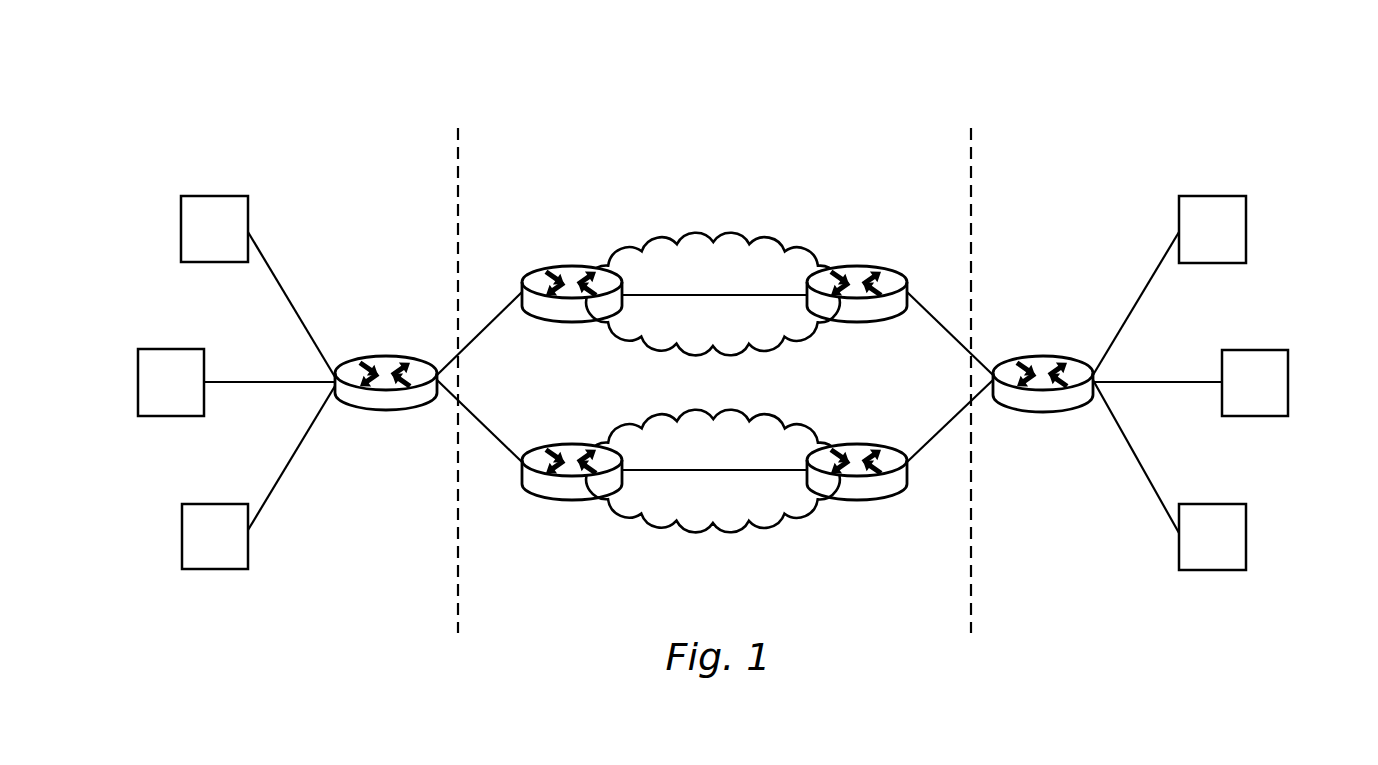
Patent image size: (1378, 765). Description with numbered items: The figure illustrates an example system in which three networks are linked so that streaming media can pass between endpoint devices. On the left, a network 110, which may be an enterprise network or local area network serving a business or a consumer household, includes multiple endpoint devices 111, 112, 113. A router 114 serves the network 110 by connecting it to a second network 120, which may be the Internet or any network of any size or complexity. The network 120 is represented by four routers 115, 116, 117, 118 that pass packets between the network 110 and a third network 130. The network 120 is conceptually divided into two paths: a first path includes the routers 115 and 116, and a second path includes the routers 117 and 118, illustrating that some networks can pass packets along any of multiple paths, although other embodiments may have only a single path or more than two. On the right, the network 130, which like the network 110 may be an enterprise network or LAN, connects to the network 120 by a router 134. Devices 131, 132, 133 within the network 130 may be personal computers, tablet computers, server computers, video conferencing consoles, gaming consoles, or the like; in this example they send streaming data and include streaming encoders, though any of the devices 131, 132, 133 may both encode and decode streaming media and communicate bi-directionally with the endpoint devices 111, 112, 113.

The network 110 is at (299, 108).
The endpoint device 111 is at (213, 196).
The endpoint device 112 is at (138, 382).
The endpoint device 113 is at (214, 569).
The router 114 is at (385, 355).
The router 115 is at (547, 266).
The router 116 is at (878, 266).
The router 117 is at (547, 499).
The router 118 is at (878, 499).
The network 120 is at (588, 108).
The network 130 is at (1126, 108).
The device 131 is at (1211, 196).
The device 132 is at (1288, 383).
The device 133 is at (1212, 570).
The router 134 is at (1043, 355).